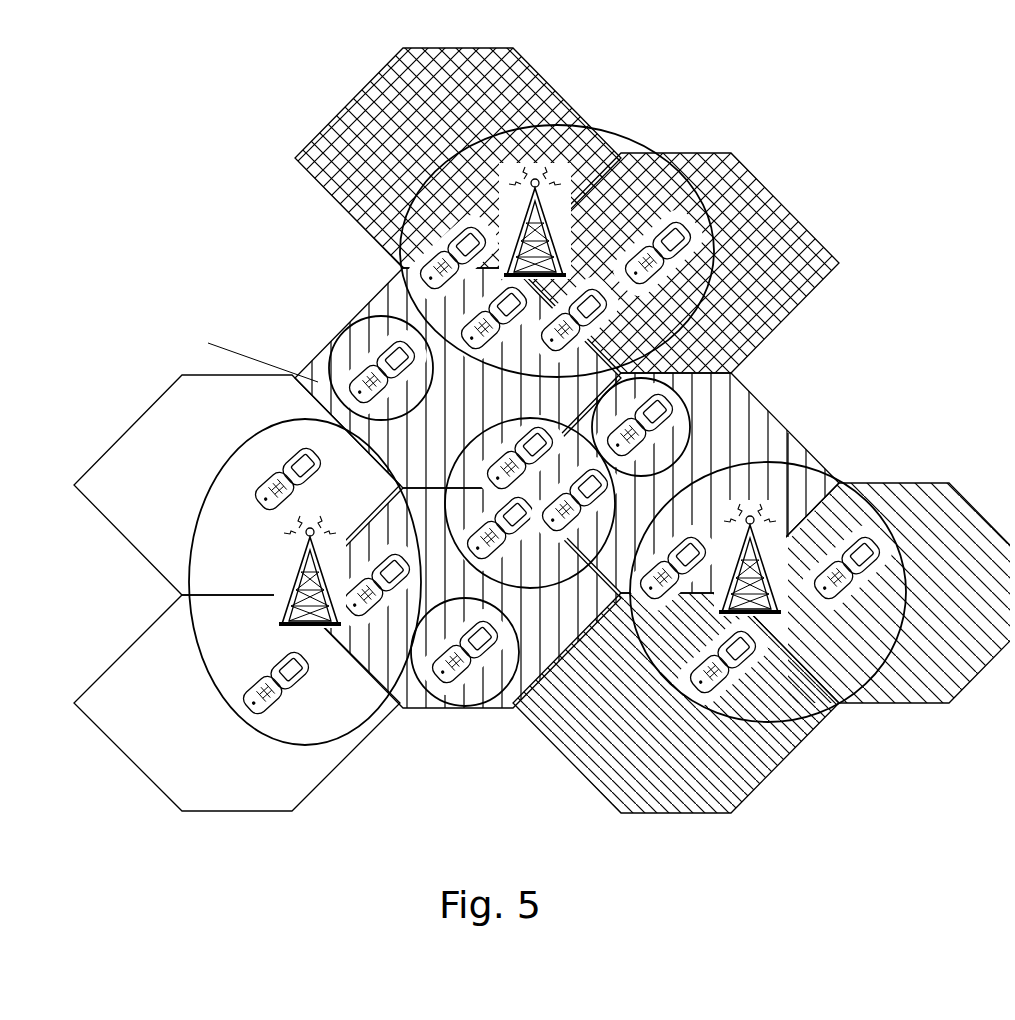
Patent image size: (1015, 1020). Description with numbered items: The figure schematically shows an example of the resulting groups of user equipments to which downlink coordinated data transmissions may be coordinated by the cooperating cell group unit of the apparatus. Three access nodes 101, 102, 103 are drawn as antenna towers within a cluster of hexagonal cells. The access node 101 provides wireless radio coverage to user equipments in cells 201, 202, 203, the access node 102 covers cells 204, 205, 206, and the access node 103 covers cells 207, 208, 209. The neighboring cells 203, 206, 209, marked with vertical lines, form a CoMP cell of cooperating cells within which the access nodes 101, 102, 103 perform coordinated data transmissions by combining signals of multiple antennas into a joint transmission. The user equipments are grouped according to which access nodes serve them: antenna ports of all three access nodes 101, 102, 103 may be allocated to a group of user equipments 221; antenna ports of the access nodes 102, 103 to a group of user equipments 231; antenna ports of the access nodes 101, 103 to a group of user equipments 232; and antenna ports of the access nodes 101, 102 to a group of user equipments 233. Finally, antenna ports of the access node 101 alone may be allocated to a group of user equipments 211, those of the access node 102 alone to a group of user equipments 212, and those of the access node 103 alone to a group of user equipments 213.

The access node 101 is at (550, 210).
The access node 102 is at (770, 535).
The access node 103 is at (292, 590).
The cell 201 is at (420, 94).
The cell 202 is at (740, 279).
The cell 203 is at (449, 409).
The cell 204 is at (640, 794).
The cell 205 is at (954, 606).
The cell 206 is at (708, 451).
The cell 207 is at (112, 721).
The cell 208 is at (122, 499).
The cell 209 is at (515, 618).
The group of user equipments 211 is at (399, 258).
The group of user equipments 212 is at (836, 718).
The group of user equipments 213 is at (320, 745).
The group of user equipments 221 is at (229, 353).
The group of user equipments 231 is at (470, 708).
The group of user equipments 232 is at (322, 372).
The group of user equipments 233 is at (760, 400).